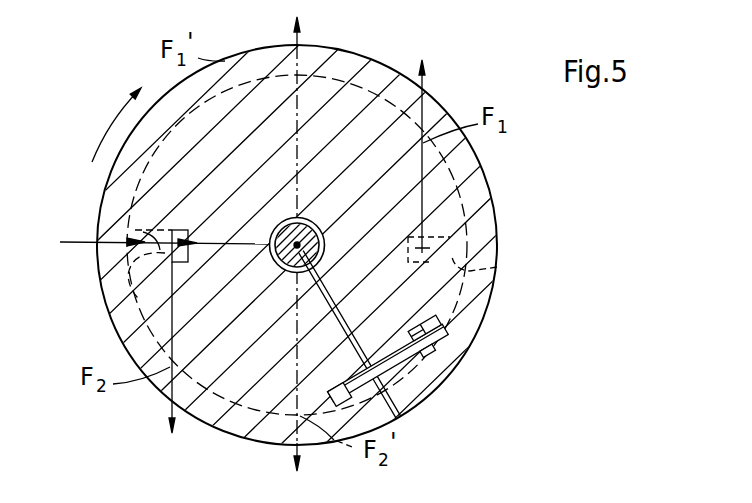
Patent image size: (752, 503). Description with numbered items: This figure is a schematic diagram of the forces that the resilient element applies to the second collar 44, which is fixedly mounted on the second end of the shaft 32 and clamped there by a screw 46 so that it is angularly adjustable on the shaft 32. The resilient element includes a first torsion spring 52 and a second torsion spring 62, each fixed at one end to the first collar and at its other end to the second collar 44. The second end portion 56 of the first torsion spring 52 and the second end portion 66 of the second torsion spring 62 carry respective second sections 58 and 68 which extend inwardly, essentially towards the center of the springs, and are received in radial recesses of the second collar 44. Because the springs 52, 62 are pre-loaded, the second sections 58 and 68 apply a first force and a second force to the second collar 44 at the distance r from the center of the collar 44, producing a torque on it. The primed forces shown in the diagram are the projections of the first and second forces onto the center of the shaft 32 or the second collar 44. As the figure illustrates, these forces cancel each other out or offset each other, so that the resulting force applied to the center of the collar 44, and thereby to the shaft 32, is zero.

The shaft 32 is at (308, 218).
The second collar 44 is at (127, 303).
The screw 46 is at (428, 396).
The first torsion spring 52 is at (226, 418).
The second end portion of the first torsion spring 56 is at (152, 325).
The second section of the first torsion spring 58 is at (127, 215).
The second torsion spring 62 is at (278, 60).
The second end portion of the second torsion spring 66 is at (455, 242).
The second section of the second torsion spring 68 is at (497, 267).